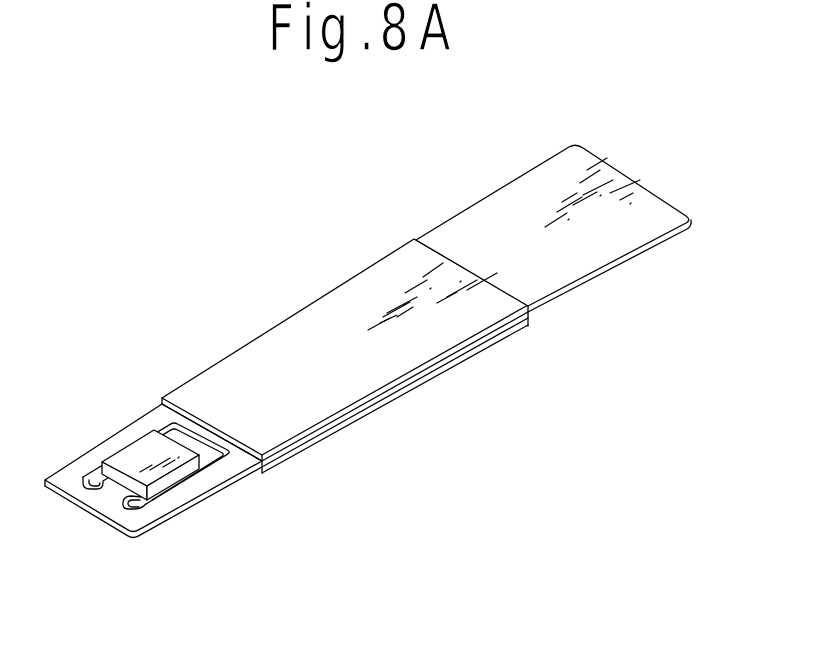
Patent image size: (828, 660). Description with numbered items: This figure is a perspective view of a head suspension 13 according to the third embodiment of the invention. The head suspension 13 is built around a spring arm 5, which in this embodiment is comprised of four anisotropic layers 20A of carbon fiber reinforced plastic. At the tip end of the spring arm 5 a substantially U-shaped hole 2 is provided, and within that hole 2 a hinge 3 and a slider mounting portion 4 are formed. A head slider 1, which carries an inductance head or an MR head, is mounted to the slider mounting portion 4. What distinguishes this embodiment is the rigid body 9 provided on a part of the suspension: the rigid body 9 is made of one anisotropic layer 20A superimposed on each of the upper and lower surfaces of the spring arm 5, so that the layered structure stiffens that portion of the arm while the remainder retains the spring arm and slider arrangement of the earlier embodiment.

The head slider 1 is at (133, 450).
The substantially U-shaped hole 2 is at (212, 462).
The hinge 3 is at (110, 495).
The slider mounting portion 4 is at (170, 490).
The spring arm 5 is at (502, 210).
The rigid body 9 is at (360, 376).
The head suspension 13 is at (246, 250).
The anisotropic layer 20A is at (353, 307).